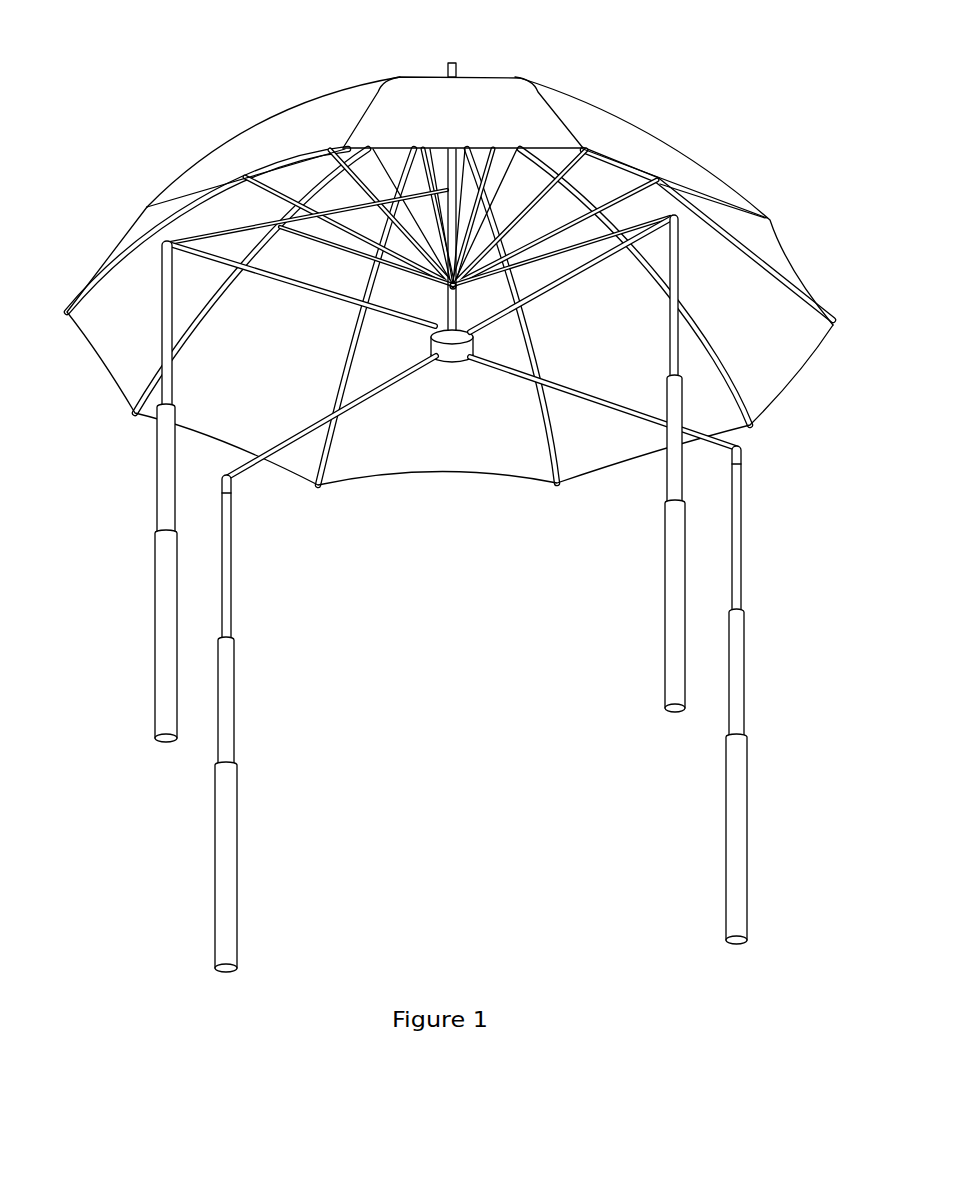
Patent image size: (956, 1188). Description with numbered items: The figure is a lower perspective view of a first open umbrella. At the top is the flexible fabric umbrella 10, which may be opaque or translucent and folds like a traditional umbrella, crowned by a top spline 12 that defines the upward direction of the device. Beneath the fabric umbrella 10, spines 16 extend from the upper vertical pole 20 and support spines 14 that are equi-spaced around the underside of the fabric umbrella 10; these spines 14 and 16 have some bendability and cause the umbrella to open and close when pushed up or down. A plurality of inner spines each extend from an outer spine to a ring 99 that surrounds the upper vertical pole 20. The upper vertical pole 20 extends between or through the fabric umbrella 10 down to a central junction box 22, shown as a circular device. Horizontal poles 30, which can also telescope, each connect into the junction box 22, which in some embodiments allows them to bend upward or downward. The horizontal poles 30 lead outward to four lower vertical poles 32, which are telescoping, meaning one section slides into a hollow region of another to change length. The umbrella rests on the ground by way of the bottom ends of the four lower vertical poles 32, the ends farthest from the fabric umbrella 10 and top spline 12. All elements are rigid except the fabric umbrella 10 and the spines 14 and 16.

The fabric umbrella 10 is at (257, 121).
The top spline 12 is at (452, 63).
The spines 14 is at (147, 232).
The spines 16 is at (300, 222).
The upper vertical pole 20 is at (454, 217).
The junction box 22 is at (446, 363).
The horizontal poles 30 is at (590, 405).
The lower vertical poles 32 is at (727, 678).
The ring 99 is at (455, 290).